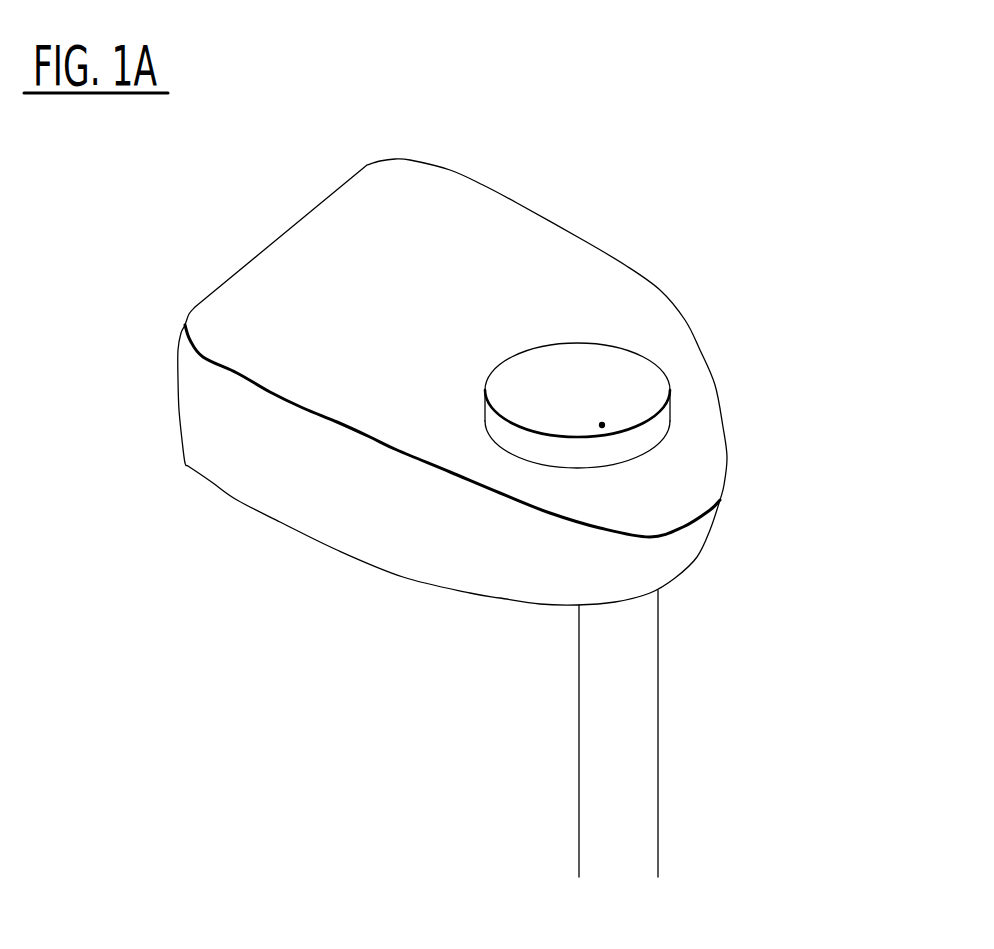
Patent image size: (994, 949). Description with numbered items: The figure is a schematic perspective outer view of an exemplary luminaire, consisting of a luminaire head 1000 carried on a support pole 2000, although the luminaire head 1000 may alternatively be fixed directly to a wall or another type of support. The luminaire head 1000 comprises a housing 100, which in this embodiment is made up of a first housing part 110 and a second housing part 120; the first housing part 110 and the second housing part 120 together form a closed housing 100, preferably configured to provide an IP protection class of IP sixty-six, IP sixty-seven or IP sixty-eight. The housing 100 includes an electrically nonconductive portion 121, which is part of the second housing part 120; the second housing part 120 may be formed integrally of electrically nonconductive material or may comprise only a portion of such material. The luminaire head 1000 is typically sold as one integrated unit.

The luminaire head 1000 is at (625, 83).
The housing 100 is at (647, 233).
The first housing part 110 is at (648, 307).
The second housing part 120 is at (622, 383).
The electrically nonconductive portion 121 is at (602, 425).
The support pole 2000 is at (623, 718).